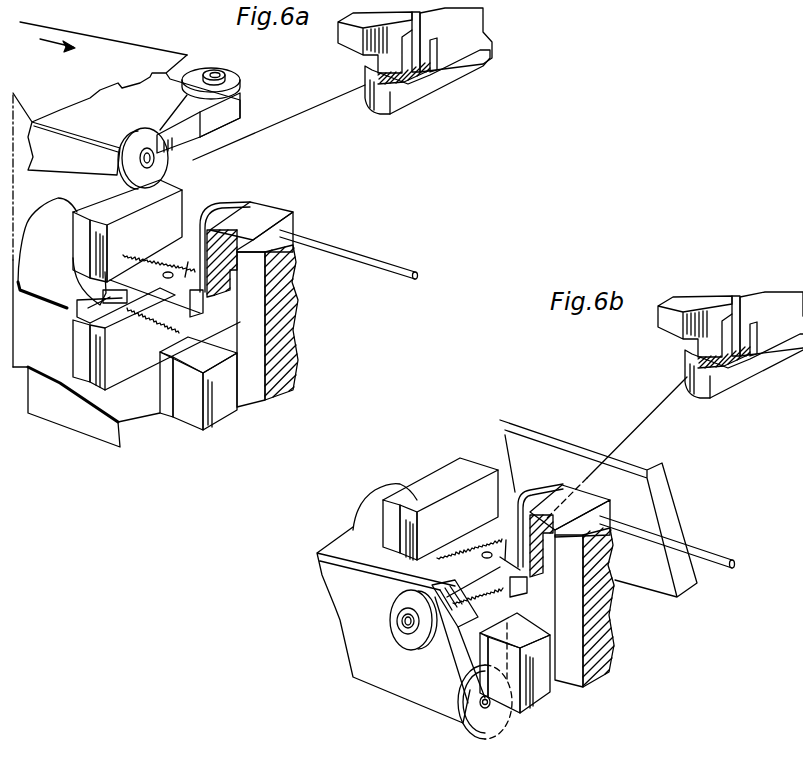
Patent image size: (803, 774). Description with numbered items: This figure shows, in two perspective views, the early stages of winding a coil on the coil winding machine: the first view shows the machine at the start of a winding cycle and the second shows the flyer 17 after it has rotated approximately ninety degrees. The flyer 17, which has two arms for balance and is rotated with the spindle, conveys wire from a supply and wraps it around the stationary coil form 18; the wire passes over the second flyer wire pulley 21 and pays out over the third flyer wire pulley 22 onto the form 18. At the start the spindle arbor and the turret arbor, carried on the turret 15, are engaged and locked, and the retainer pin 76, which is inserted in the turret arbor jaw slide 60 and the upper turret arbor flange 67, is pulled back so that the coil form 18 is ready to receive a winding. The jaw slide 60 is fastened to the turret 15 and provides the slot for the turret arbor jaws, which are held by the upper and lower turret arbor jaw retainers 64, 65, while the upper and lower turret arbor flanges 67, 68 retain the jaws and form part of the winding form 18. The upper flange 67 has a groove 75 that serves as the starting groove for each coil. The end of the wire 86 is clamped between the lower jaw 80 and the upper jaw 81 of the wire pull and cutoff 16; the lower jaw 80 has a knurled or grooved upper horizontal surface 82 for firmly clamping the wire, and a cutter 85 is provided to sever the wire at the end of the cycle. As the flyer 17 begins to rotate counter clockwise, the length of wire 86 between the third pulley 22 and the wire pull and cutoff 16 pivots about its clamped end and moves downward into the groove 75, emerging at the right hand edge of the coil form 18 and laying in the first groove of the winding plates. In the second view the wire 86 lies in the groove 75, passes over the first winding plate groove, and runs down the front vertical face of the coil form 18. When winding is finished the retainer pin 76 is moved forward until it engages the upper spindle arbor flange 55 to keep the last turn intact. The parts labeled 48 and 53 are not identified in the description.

In FIG. 6A, the turret 15 is at (297, 318).
In FIG. 6B, the turret 15 is at (612, 622).
In FIG. 6A, the wire pull and cutoff 16 is at (458, 37).
In FIG. 6B, the wire pull and cutoff 16 is at (767, 320).
In FIG. 6A, the flyer 17 is at (100, 98).
In FIG. 6B, the flyer 17 is at (572, 433).
In FIG. 6A, the coil form 18 is at (189, 258).
In FIG. 6B, the coil form 18 is at (506, 540).
In FIG. 6A, the second flyer wire pulley 21 is at (232, 81).
In FIG. 6B, the second flyer wire pulley 21 is at (420, 636).
In FIG. 6A, the third flyer wire pulley 22 is at (157, 147).
In FIG. 6B, the third flyer wire pulley 22 is at (485, 718).
In FIG. 6A, the strip channel 48 is at (31, 252).
In FIG. 6B, the strip channel 48 is at (378, 500).
In FIG. 6A, the jaw support 53 is at (80, 227).
In FIG. 6B, the jaw support 53 is at (388, 520).
In FIG. 6A, the upper spindle arbor flange 55 is at (175, 200).
In FIG. 6B, the upper spindle arbor flange 55 is at (485, 470).
In FIG. 6A, the turret arbor jaw slide 60 is at (222, 397).
In FIG. 6B, the turret arbor jaw slide 60 is at (537, 677).
In FIG. 6A, the upper turret arbor jaw retainer 64 is at (282, 212).
In FIG. 6B, the upper turret arbor jaw retainer 64 is at (590, 497).
In FIG. 6A, the lower turret arbor jaw retainer 65 is at (195, 426).
In FIG. 6B, the lower turret arbor jaw retainer 65 is at (512, 710).
In FIG. 6A, the upper turret arbor flange 67 is at (237, 203).
In FIG. 6B, the upper turret arbor flange 67 is at (531, 498).
In FIG. 6A, the lower turret arbor flange 68 is at (165, 391).
In FIG. 6B, the lower turret arbor flange 68 is at (482, 668).
In FIG. 6A, the groove 75 is at (263, 201).
In FIG. 6B, the groove 75 is at (558, 487).
In FIG. 6A, the retainer pin 76 is at (376, 266).
In FIG. 6B, the retainer pin 76 is at (703, 553).
In FIG. 6A, the lower jaw 80 is at (403, 103).
In FIG. 6B, the lower jaw 80 is at (744, 372).
In FIG. 6A, the upper jaw 81 is at (378, 62).
In FIG. 6B, the upper jaw 81 is at (691, 329).
In FIG. 6A, the knurled or grooved upper horizontal surface 82 is at (417, 88).
In FIG. 6B, the knurled or grooved upper horizontal surface 82 is at (724, 384).
In FIG. 6A, the cutter 85 is at (457, 33).
In FIG. 6B, the cutter 85 is at (757, 306).
In FIG. 6A, the wire 86 is at (272, 123).
In FIG. 6B, the wire 86 is at (643, 423).